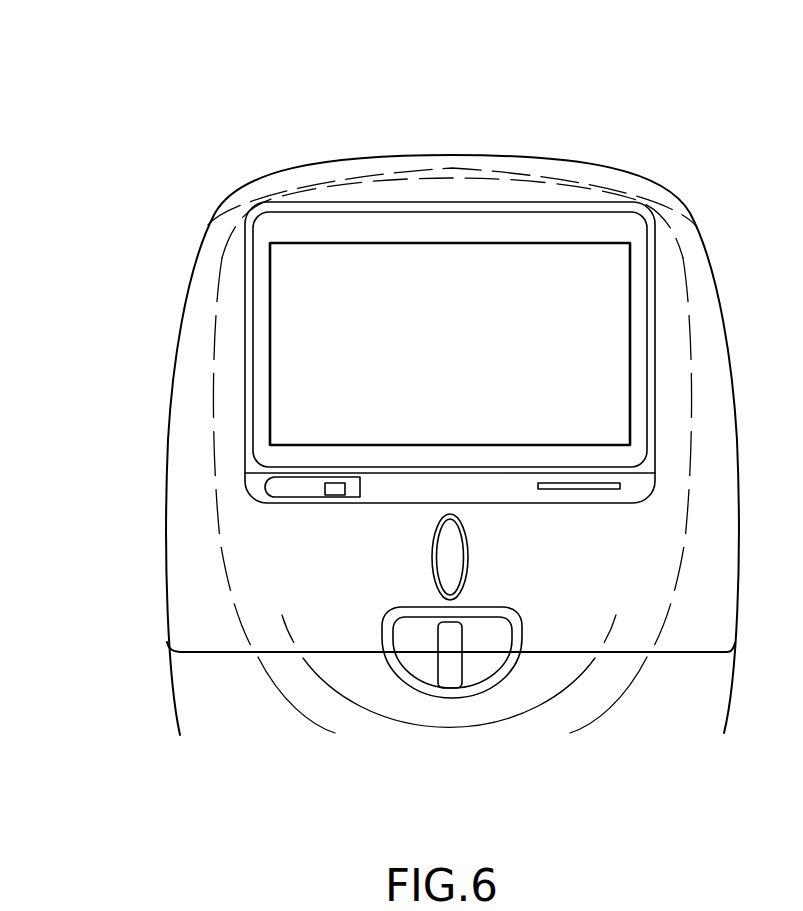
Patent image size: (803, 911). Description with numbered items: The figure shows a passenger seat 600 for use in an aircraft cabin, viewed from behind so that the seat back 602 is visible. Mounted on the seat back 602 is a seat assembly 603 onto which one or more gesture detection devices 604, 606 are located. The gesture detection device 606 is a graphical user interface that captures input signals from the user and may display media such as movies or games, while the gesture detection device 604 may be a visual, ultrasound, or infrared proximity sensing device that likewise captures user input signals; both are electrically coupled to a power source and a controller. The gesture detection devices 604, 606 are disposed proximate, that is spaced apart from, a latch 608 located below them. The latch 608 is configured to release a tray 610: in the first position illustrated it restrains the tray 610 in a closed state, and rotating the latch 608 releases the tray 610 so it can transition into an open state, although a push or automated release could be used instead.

The passenger seat 600 is at (236, 106).
The seat back 602 is at (197, 512).
The seat assembly 603 is at (220, 284).
The gesture detection device 604 is at (418, 571).
The gesture detection device 606 is at (470, 364).
The latch 608 is at (452, 653).
The tray 610 is at (258, 736).